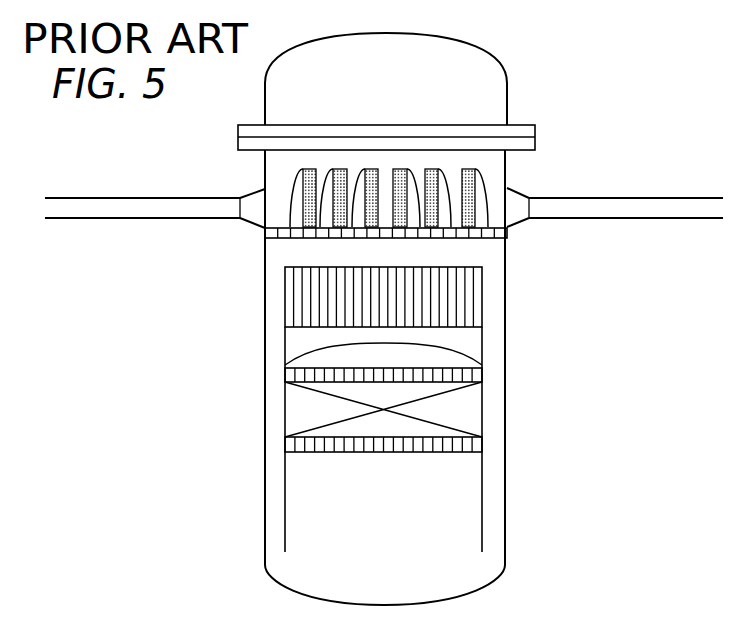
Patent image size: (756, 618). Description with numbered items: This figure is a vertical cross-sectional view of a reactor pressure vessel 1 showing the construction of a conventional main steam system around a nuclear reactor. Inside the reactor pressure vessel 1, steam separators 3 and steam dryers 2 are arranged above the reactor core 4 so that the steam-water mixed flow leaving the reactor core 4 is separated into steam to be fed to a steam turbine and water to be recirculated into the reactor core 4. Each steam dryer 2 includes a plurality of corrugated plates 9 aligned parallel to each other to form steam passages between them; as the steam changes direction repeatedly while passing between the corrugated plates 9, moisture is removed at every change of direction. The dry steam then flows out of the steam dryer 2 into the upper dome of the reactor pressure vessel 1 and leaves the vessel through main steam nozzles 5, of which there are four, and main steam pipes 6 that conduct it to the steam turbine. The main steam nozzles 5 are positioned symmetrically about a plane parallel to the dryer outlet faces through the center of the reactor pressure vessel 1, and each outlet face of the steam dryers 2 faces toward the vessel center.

The reactor pressure vessel 1 is at (483, 50).
The steam dryer 2 is at (280, 241).
The steam separator 3 is at (300, 303).
The reactor core 4 is at (465, 408).
The main steam nozzle 5 is at (256, 224).
The main steam pipe 6 is at (137, 198).
The corrugated plate 9 is at (309, 169).